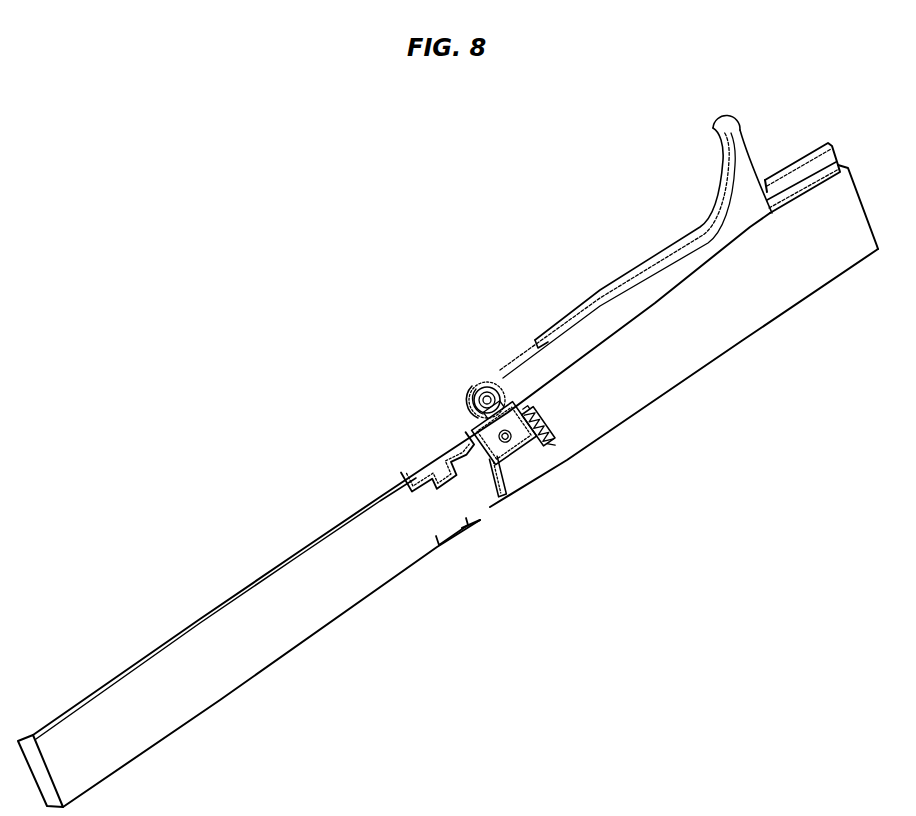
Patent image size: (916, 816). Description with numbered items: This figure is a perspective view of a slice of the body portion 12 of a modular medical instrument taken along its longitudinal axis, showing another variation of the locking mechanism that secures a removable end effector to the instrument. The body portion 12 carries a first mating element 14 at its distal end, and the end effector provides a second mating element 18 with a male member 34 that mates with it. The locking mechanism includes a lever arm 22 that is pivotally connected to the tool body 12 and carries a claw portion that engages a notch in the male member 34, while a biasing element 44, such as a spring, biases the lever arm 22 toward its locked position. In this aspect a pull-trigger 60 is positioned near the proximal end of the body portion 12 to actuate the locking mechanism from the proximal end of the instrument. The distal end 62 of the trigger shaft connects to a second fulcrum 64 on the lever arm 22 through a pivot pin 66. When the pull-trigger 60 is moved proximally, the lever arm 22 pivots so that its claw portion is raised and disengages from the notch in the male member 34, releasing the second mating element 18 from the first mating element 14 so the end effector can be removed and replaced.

The body portion 12 is at (847, 260).
The mating element 14 is at (472, 530).
The second mating element 18 is at (458, 533).
The lever arm 22 is at (458, 450).
The male member 34 is at (488, 512).
The biasing element 44 is at (553, 422).
The pull-trigger 60 is at (735, 130).
The distal end of the trigger shaft 62 is at (468, 378).
The second fulcrum 64 is at (462, 421).
The pivot pin 66 is at (465, 401).